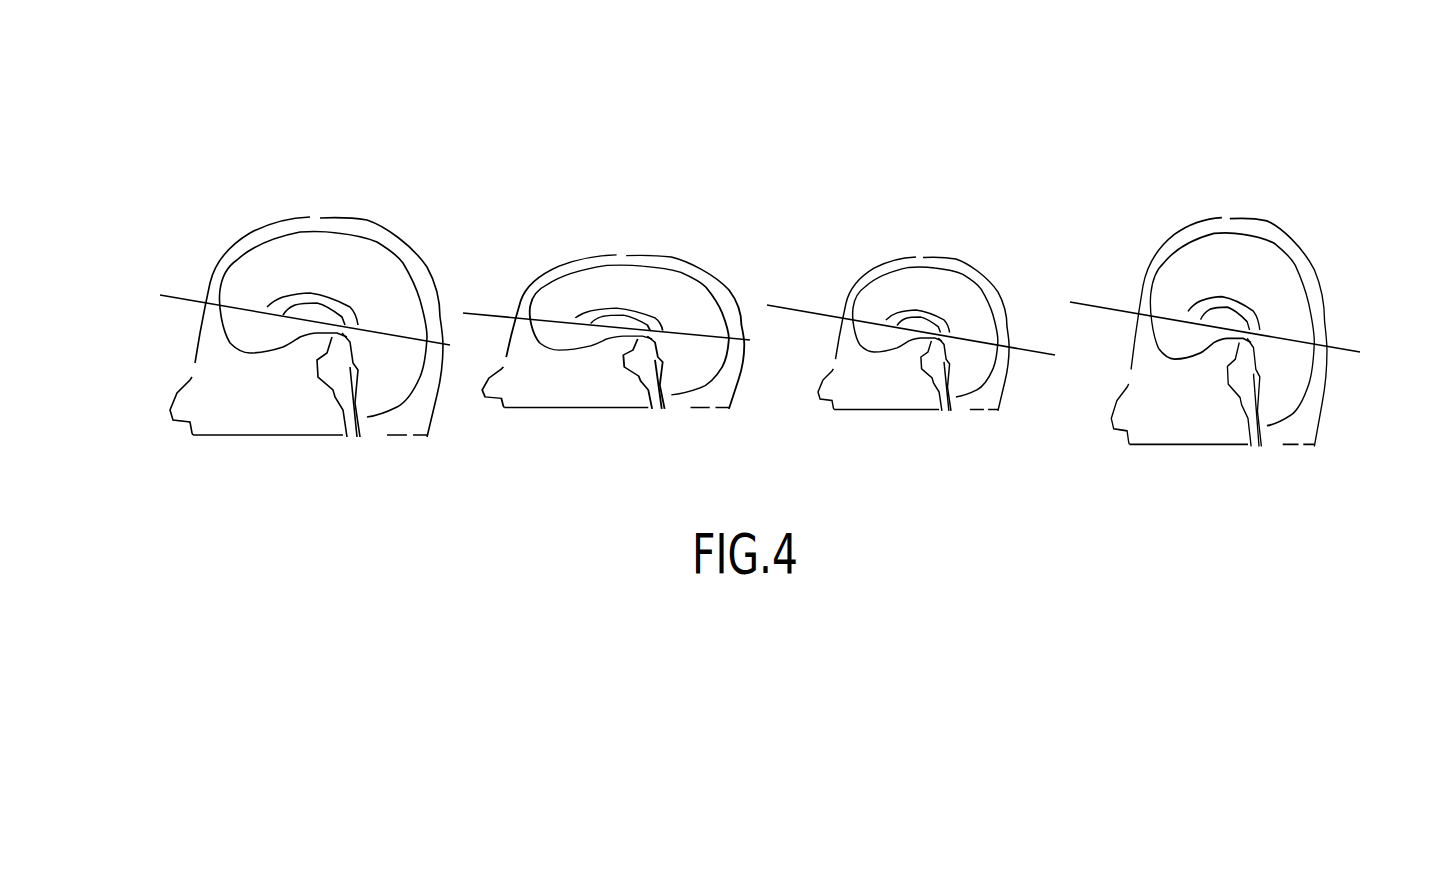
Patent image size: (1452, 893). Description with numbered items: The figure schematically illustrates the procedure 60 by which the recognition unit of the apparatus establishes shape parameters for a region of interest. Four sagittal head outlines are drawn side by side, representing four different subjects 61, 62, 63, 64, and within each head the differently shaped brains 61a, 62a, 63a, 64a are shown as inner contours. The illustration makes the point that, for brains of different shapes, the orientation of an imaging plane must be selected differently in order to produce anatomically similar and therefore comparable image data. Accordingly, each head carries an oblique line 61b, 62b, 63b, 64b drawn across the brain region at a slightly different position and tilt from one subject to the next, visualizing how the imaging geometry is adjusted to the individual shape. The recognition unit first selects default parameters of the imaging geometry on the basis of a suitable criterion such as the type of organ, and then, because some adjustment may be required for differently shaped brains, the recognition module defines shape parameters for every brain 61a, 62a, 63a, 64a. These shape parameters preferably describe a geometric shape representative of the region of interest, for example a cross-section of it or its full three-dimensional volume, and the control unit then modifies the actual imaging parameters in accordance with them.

The procedure of establishing the shape parameters 60 is at (247, 100).
The subject 61 is at (305, 214).
The brain 61a is at (260, 262).
The reference line of first image 61b is at (190, 300).
The subject 62 is at (707, 263).
The brain 62a is at (597, 262).
The reference line of second image 62b is at (490, 314).
The subject 63 is at (900, 253).
The brain 63a is at (877, 277).
The reference line of third image 63b is at (830, 316).
The subject 64 is at (1220, 218).
The brain 64a is at (1183, 243).
The reference line of fourth image 64b is at (1340, 347).